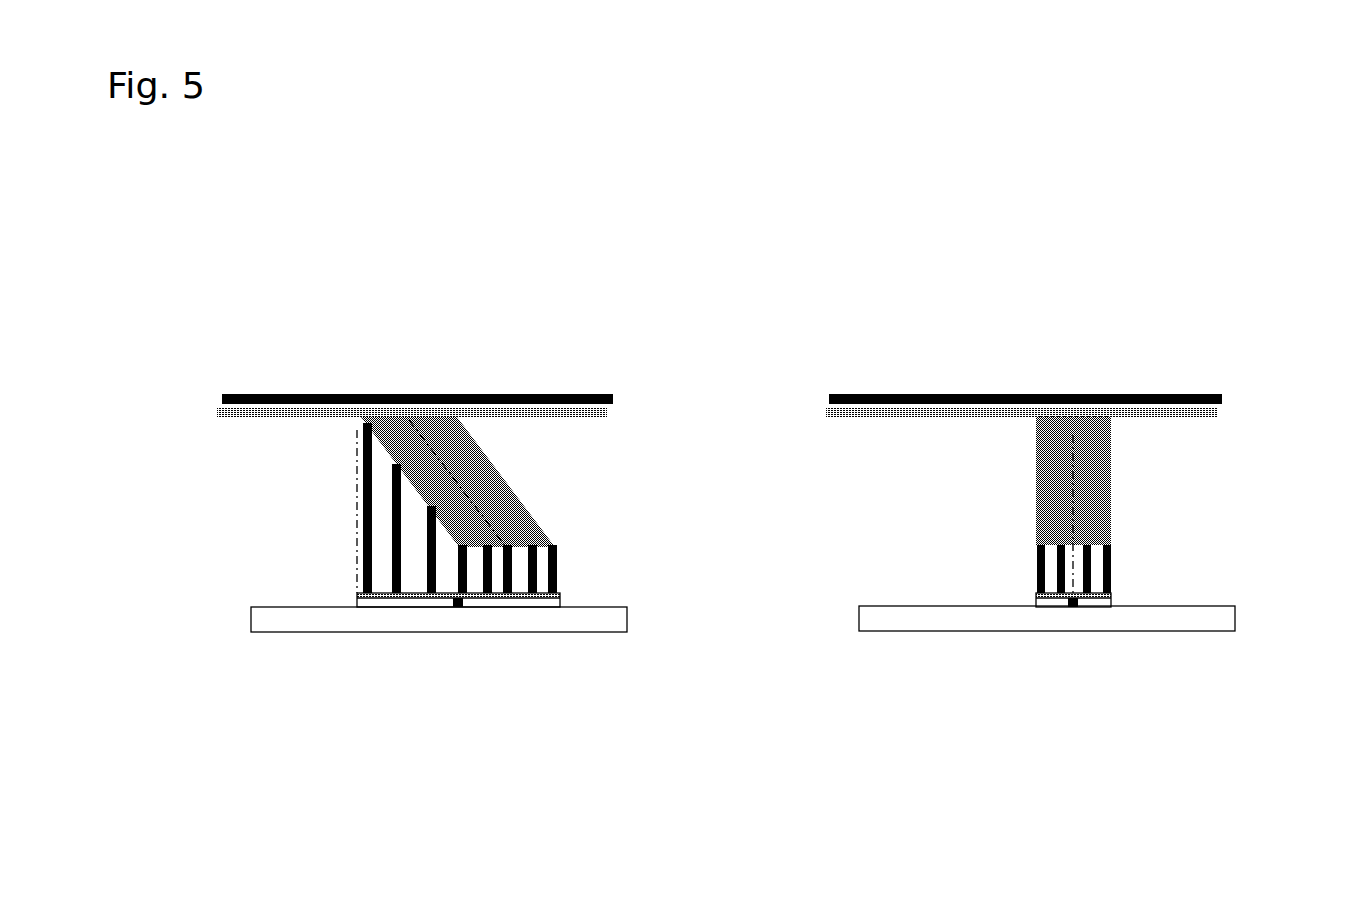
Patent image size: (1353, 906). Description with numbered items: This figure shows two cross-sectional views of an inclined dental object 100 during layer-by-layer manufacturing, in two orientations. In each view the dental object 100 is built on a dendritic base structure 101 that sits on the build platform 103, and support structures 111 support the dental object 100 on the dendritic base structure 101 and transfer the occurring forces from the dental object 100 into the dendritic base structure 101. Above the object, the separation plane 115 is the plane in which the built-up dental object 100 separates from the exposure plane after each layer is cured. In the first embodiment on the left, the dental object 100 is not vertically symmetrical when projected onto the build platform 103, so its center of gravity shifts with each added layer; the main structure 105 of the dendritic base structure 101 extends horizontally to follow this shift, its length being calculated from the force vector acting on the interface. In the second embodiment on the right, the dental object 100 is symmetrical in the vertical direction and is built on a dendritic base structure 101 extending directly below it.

The dental object 100 is at (493, 498).
The dendritic base structure 101 is at (360, 598).
The build platform 103 is at (265, 618).
The main structure 105 is at (457, 607).
The support structures 111 is at (548, 565).
The separation plane 115 is at (457, 392).